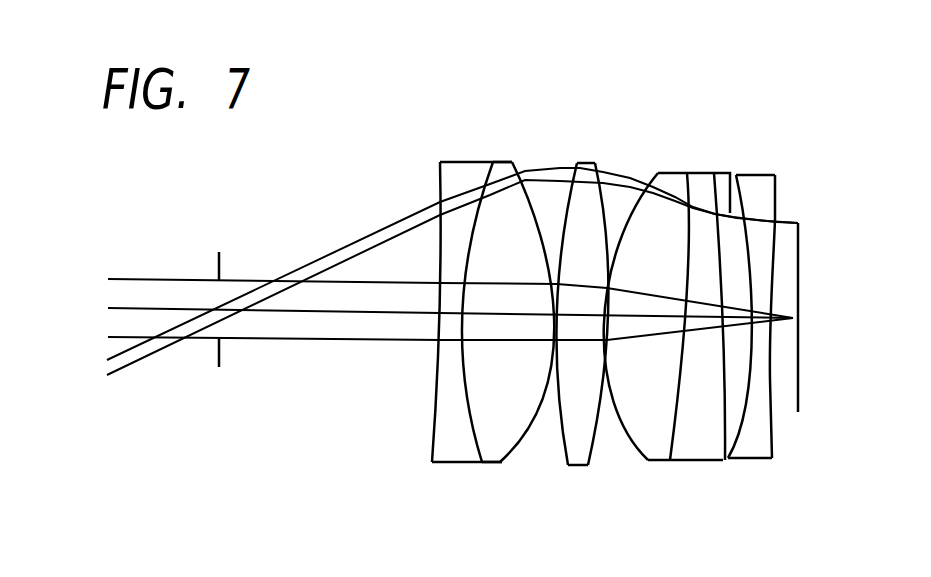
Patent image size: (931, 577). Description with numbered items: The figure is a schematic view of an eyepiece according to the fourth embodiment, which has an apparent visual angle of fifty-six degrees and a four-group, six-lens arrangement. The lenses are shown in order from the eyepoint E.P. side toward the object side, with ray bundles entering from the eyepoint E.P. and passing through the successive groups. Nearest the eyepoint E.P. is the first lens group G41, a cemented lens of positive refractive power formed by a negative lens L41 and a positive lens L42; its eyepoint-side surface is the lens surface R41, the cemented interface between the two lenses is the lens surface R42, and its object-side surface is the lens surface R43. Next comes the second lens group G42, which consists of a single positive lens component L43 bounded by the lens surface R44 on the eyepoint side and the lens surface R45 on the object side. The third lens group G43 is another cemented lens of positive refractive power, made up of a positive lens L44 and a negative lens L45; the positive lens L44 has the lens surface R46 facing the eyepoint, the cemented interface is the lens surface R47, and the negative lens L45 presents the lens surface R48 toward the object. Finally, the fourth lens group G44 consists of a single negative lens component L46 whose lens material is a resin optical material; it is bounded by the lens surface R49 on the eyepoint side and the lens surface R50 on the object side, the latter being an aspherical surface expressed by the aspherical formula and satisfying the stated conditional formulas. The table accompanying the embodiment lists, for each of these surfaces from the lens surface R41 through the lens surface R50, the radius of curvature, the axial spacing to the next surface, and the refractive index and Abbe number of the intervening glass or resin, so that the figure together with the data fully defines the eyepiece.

The eyepoint E.P. is at (224, 293).
The first lens group G41 is at (545, 58).
The second lens group G42 is at (620, 58).
The third lens group G43 is at (743, 58).
The fourth lens group G44 is at (817, 58).
The negative lens L41 is at (467, 304).
The positive lens L42 is at (521, 322).
The positive lens component L43 is at (599, 304).
The positive lens L44 is at (662, 304).
The negative lens L45 is at (713, 304).
The negative lens component L46 is at (786, 304).
The lens surface R41 is at (440, 235).
The lens surface R42 is at (492, 190).
The lens surface R43 is at (532, 222).
The lens surface R44 is at (557, 200).
The lens surface R45 is at (604, 192).
The lens surface R46 is at (658, 173).
The lens surface R47 is at (687, 173).
The lens surface R48 is at (717, 173).
The lens surface R49 is at (745, 218).
The lens surface R50 is at (778, 250).